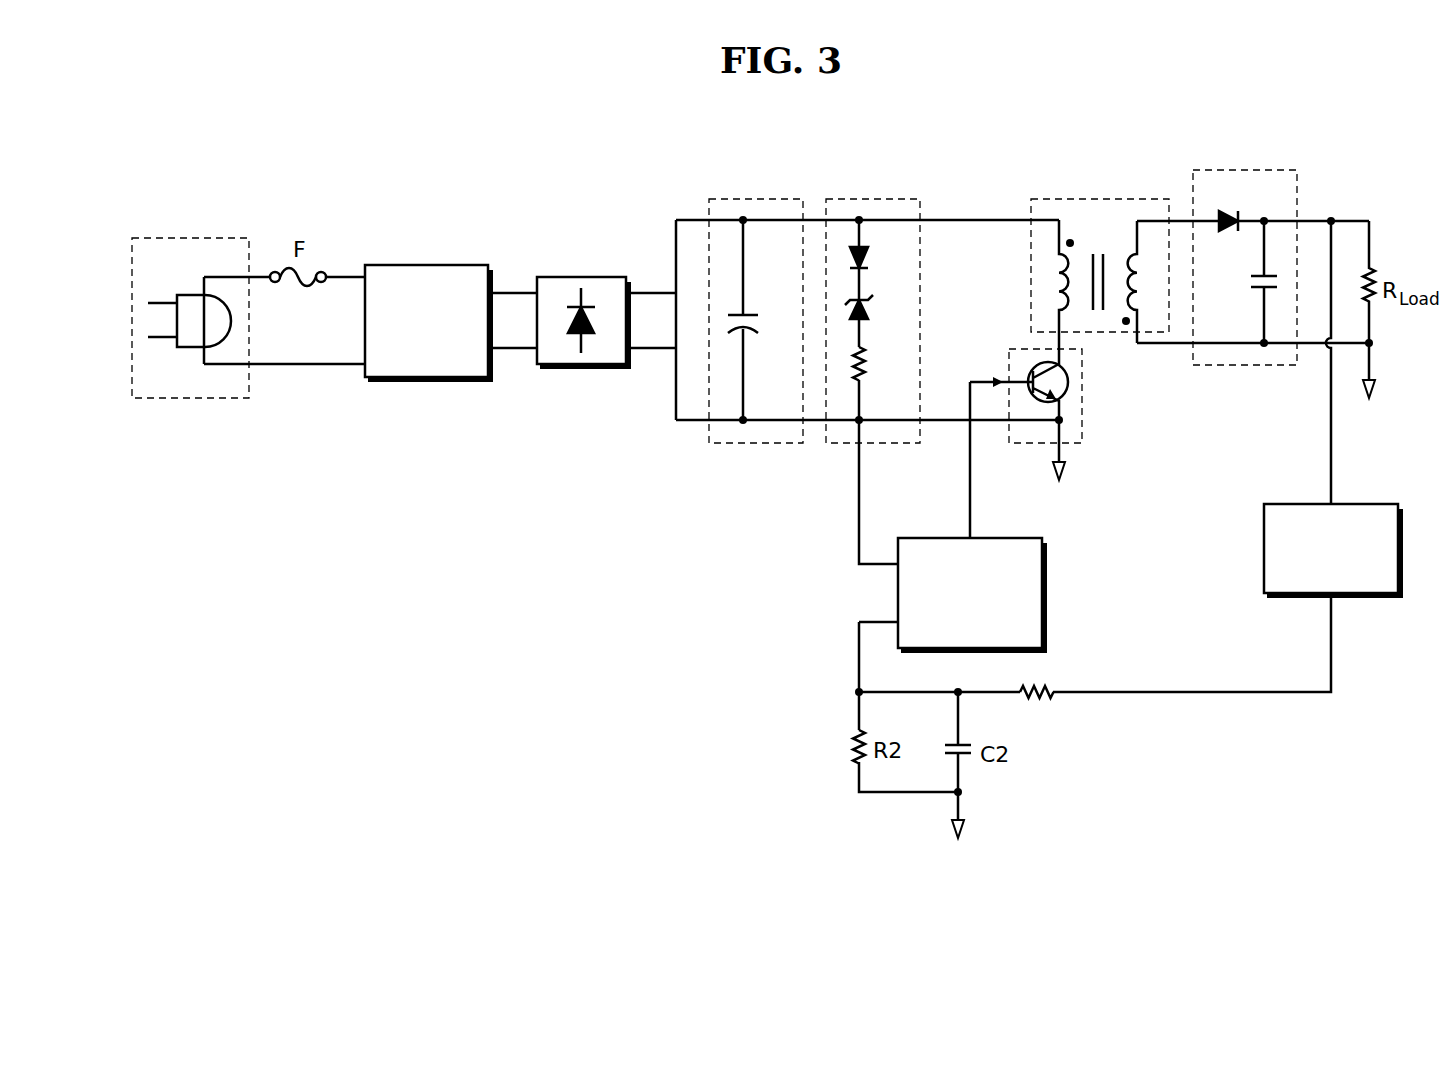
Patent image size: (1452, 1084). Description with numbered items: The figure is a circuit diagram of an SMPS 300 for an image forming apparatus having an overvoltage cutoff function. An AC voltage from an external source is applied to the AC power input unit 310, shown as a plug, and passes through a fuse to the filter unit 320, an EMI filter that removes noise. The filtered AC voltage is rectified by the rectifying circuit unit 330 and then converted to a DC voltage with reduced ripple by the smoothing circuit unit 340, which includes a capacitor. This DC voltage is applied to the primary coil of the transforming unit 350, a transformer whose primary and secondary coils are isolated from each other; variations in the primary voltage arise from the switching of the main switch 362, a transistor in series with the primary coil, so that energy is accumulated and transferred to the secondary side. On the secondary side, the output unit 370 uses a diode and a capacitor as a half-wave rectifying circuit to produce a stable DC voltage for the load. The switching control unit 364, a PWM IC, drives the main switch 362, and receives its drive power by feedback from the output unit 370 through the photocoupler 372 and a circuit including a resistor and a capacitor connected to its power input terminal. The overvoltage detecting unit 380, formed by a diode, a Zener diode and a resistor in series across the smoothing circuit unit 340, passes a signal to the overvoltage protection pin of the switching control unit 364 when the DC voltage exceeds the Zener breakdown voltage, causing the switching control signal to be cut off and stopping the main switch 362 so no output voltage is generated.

The SMPS 300 is at (998, 147).
The AC power input unit 310 is at (186, 238).
The filter unit 320 is at (430, 265).
The rectifying circuit unit 330 is at (583, 277).
The smoothing circuit unit 340 is at (755, 199).
The transforming unit 350 is at (1100, 199).
The main switch 362 is at (1082, 382).
The switching control unit 364 is at (1000, 538).
The output unit 370 is at (1256, 170).
The photocoupler 372 is at (1357, 504).
The overvoltage detecting unit 380 is at (870, 199).